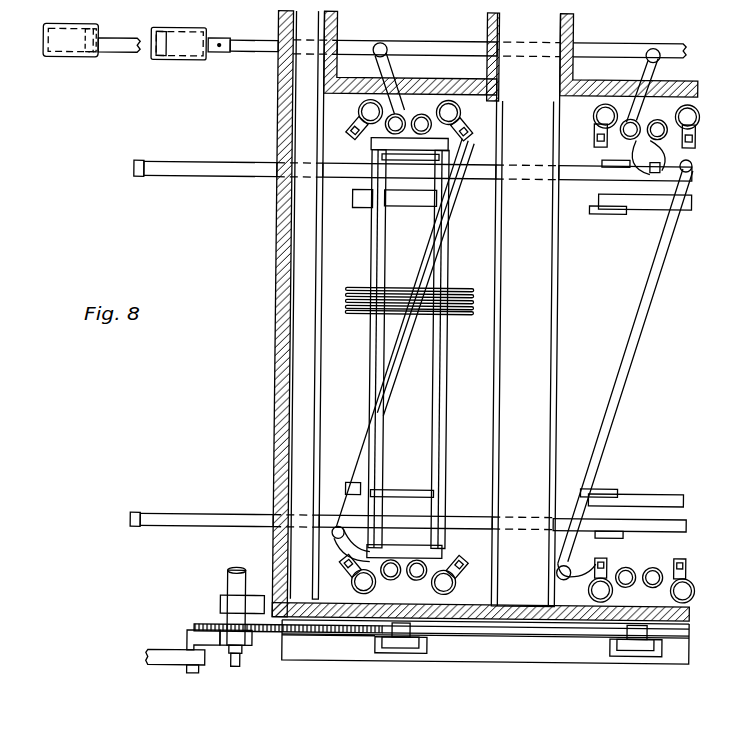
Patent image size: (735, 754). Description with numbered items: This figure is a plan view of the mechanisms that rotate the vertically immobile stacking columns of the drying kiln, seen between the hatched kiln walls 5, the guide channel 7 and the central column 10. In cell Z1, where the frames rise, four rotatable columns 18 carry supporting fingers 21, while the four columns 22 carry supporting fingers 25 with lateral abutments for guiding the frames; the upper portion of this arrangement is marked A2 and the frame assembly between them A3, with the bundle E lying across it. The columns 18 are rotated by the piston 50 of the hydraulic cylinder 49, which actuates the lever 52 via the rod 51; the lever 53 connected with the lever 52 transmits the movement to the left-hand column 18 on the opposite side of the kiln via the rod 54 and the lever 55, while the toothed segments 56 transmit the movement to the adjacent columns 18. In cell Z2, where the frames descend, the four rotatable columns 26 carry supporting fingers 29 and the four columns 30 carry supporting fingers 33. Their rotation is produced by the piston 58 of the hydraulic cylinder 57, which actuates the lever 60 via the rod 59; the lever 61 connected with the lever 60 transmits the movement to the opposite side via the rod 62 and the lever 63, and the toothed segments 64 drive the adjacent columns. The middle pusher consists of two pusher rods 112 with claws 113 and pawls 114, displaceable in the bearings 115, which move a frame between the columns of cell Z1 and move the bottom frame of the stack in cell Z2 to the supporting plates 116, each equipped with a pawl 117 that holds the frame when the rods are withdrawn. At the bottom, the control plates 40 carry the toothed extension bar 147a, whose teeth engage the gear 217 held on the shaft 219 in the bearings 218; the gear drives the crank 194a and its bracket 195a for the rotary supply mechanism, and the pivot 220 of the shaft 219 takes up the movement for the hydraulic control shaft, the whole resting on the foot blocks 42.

The hatched frame wall 5 is at (276, 211).
The guide channel 7 is at (315, 254).
The column 10 is at (525, 310).
The rod 59 is at (122, 52).
The rod 51 is at (241, 53).
The hydraulic cylinder 57 is at (68, 60).
The piston 58 is at (86, 32).
The hydraulic cylinder 49 is at (180, 62).
The piston 50 is at (163, 32).
The lever 52 is at (386, 62).
The lever 60 is at (642, 65).
The columns 22 is at (357, 106).
The supporting fingers 25 is at (350, 130).
The lever 53 is at (465, 146).
The supporting fingers 21 is at (385, 150).
The assembly A2 is at (372, 144).
The frame assembly A3 is at (436, 463).
The toothed segments 56 is at (396, 113).
The rotatable columns 18 is at (422, 113).
The columns 30 is at (592, 114).
The rotatable columns 26 is at (657, 116).
The supporting fingers 29 is at (632, 564).
The supporting fingers 33 is at (592, 131).
The toothed segments 64 is at (652, 170).
The lever 61 is at (680, 168).
The rod 62 is at (596, 457).
The lever 63 is at (568, 576).
The claws 113 is at (136, 163).
The pusher rods 112 is at (203, 164).
The bearings 115 is at (292, 168).
The pawls 114 is at (600, 167).
The supporting plates 116 is at (412, 206).
The pawl 117 is at (360, 208).
The element bundle E is at (358, 313).
The cell Z1 is at (472, 339).
The cell Z2 is at (584, 350).
The rod 54 is at (360, 462).
The lever 55 is at (352, 538).
The bearings 218 is at (230, 600).
The gear 217 is at (200, 626).
The crank 194a is at (190, 640).
The support bar 195a is at (160, 667).
The shaft 219 is at (233, 656).
The pivot 220 is at (242, 666).
The control plates 40 is at (507, 635).
The extension bar 147a is at (333, 640).
The foot block 42 is at (400, 653).